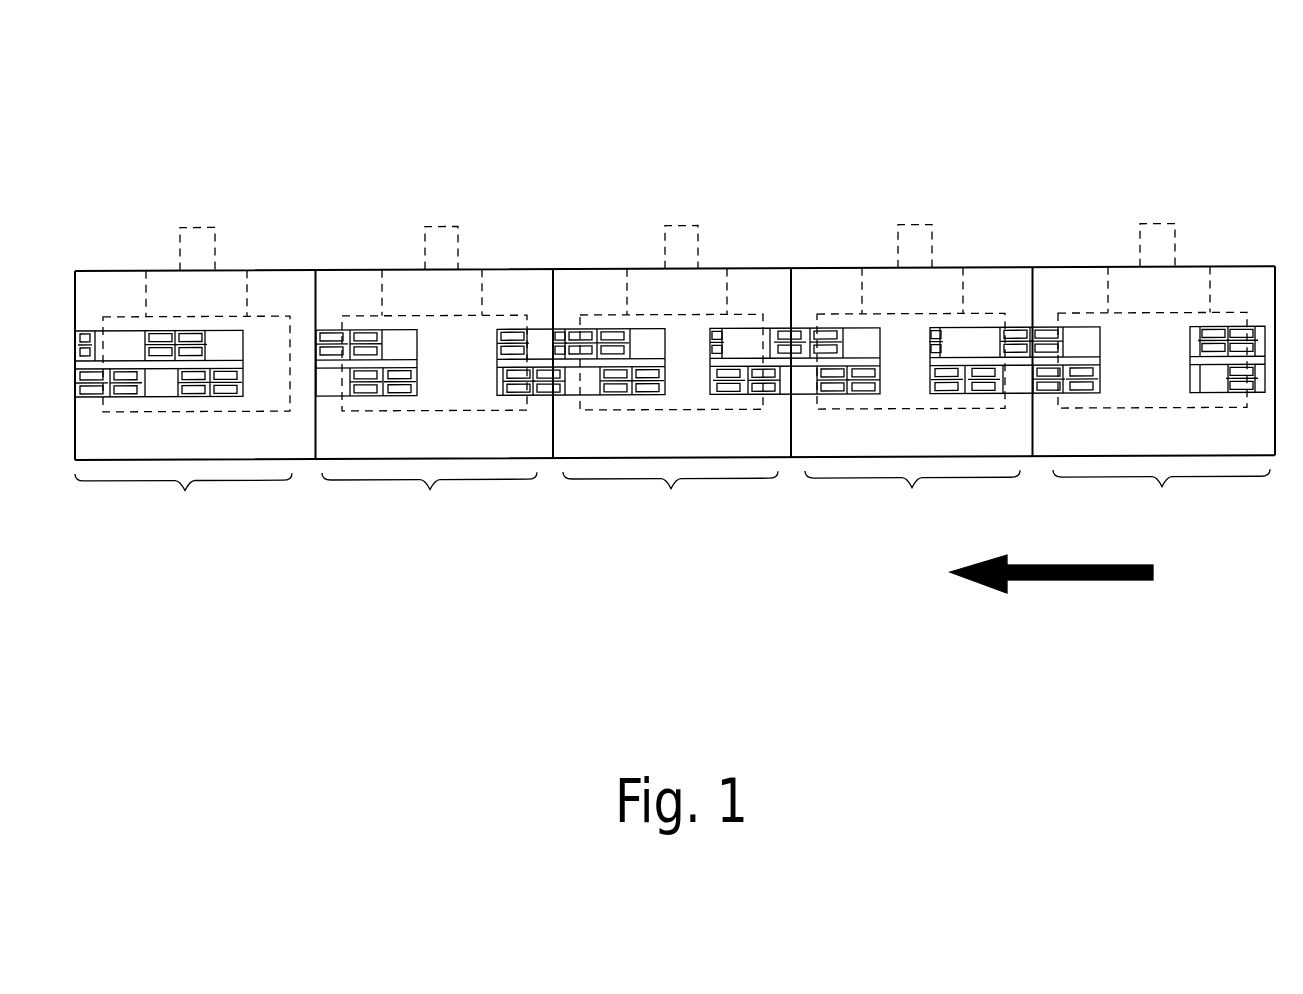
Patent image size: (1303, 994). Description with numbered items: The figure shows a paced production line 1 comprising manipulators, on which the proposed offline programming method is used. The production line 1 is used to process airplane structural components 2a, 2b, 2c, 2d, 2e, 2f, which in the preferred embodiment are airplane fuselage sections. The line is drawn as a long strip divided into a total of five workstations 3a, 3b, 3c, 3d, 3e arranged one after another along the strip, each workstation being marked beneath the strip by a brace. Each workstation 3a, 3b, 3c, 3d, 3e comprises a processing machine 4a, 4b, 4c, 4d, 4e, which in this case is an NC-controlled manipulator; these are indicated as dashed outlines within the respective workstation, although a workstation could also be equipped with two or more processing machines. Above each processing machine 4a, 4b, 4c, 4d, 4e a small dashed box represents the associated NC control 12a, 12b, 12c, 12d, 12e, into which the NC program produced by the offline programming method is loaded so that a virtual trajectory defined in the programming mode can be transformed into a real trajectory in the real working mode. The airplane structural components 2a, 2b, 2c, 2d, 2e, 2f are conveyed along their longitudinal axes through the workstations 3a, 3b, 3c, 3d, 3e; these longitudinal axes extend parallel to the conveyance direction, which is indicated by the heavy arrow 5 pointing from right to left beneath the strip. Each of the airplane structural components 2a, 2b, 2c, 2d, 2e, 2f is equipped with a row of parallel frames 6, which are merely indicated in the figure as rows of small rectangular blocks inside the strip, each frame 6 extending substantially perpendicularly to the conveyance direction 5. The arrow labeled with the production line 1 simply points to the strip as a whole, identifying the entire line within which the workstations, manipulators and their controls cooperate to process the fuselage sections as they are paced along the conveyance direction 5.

The production line 1 is at (305, 575).
The airplane structural component 2a is at (1215, 395).
The airplane structural component 2b is at (1053, 396).
The airplane structural component 2c is at (813, 397).
The airplane structural component 2d is at (565, 398).
The airplane structural component 2e is at (330, 396).
The airplane structural component 2f is at (78, 398).
The workstation 3a is at (1161, 496).
The workstation 3b is at (912, 497).
The workstation 3c is at (670, 498).
The workstation 3d is at (429, 499).
The workstation 3e is at (183, 500).
The processing machine 4a is at (1187, 301).
The processing machine 4b is at (946, 303).
The processing machine 4c is at (711, 304).
The processing machine 4d is at (460, 306).
The processing machine 4e is at (215, 304).
The conveyance direction 5 is at (1063, 581).
The frame 6 is at (86, 315).
The NC control 12a is at (1155, 241).
The NC control 12b is at (910, 248).
The NC control 12c is at (687, 249).
The NC control 12d is at (441, 250).
The NC control 12e is at (197, 248).